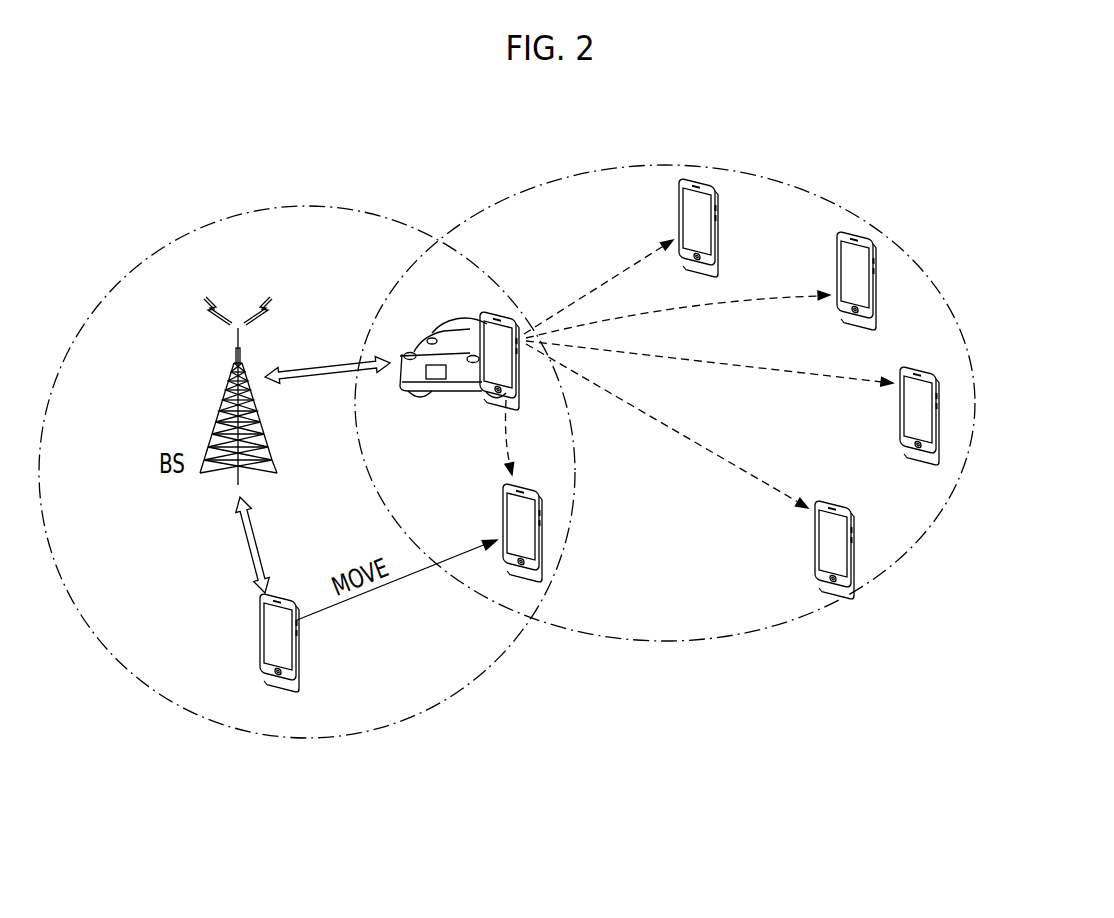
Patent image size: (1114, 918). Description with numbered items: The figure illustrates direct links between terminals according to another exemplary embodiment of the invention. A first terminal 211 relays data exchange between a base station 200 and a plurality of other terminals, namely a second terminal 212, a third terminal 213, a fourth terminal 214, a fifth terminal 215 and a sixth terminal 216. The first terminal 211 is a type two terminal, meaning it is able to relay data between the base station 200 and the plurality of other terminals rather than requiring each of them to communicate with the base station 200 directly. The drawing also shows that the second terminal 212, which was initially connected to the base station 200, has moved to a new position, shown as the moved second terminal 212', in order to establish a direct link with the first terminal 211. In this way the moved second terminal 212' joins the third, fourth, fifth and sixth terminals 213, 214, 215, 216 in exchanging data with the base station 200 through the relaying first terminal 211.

The BS 200 is at (223, 405).
The terminal 1 211 is at (496, 311).
The terminal 2 212 is at (267, 656).
The terminal 2 212' is at (598, 541).
The terminal 3 213 is at (700, 180).
The terminal 4 214 is at (860, 235).
The terminal 5 215 is at (941, 420).
The terminal 6 216 is at (840, 586).